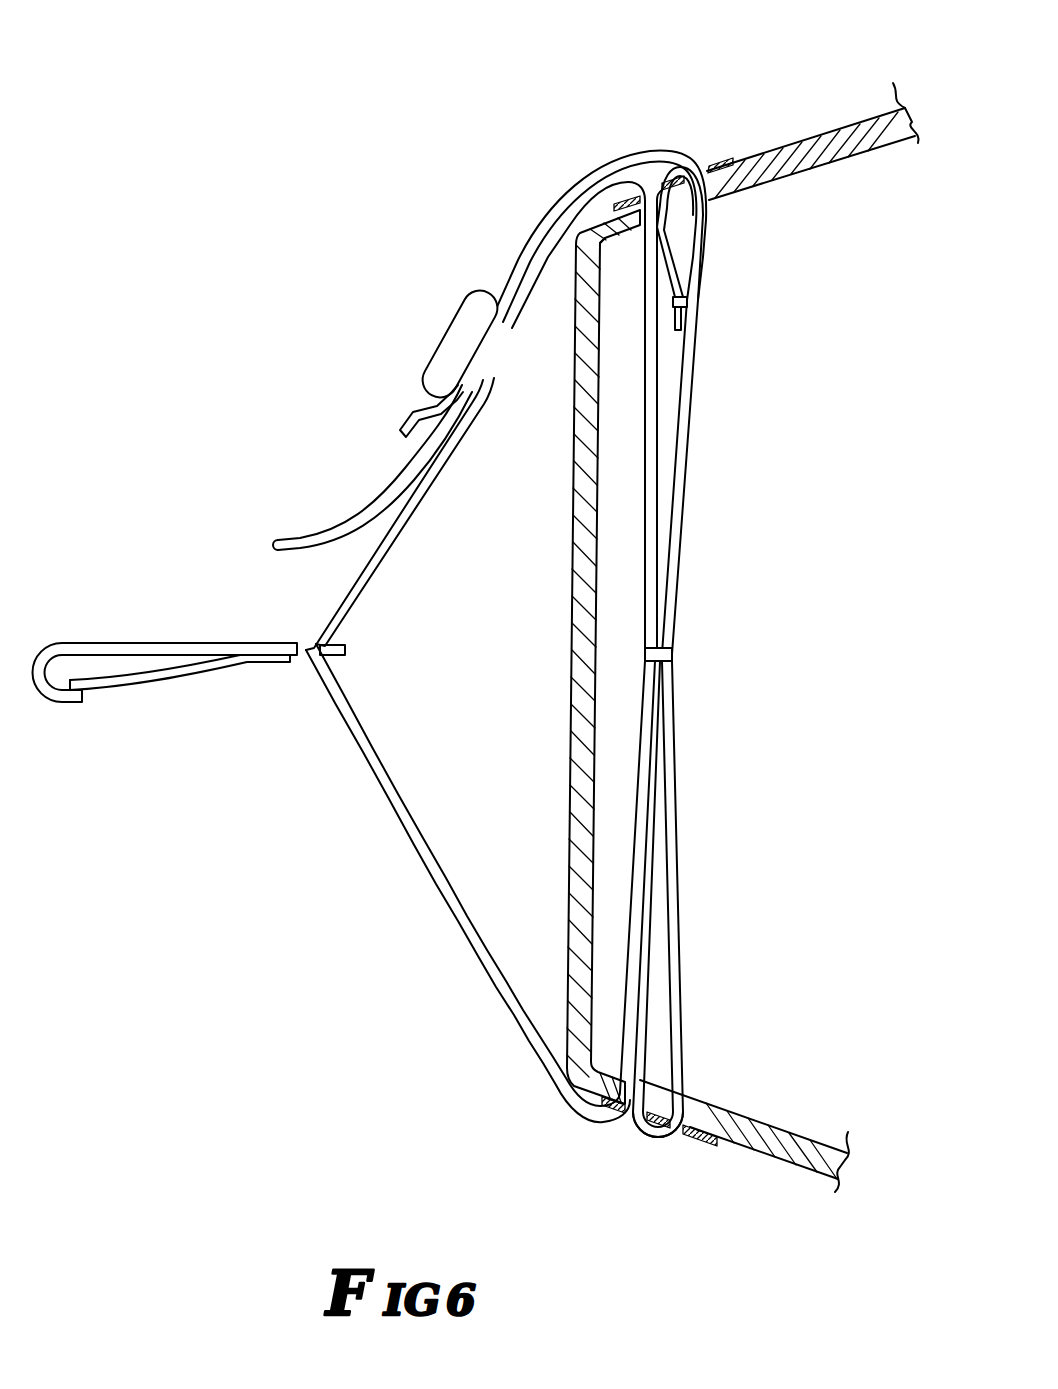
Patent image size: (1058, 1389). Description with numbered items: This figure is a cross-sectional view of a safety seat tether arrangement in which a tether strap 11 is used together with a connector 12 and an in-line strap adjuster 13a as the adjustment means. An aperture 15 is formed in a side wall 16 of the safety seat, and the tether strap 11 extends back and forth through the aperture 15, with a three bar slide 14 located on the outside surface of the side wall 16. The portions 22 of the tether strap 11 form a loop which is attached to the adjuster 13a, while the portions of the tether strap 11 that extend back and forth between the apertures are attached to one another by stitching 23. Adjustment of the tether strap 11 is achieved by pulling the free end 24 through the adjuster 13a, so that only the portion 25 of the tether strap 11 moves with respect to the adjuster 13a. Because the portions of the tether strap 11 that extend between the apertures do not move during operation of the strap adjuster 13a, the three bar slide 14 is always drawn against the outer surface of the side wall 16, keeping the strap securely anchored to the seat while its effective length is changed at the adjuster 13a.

The tether strap 11 is at (380, 806).
The connector 12 is at (117, 643).
The in-line strap adjuster 13a is at (458, 325).
The three bar slide 14 is at (714, 158).
The aperture 15 is at (722, 218).
The side wall 16 is at (781, 160).
The portions of the tether strap 22 is at (552, 232).
The stitching 23 is at (673, 652).
The free end 24 is at (315, 535).
The portion of the tether strap 25 is at (407, 527).